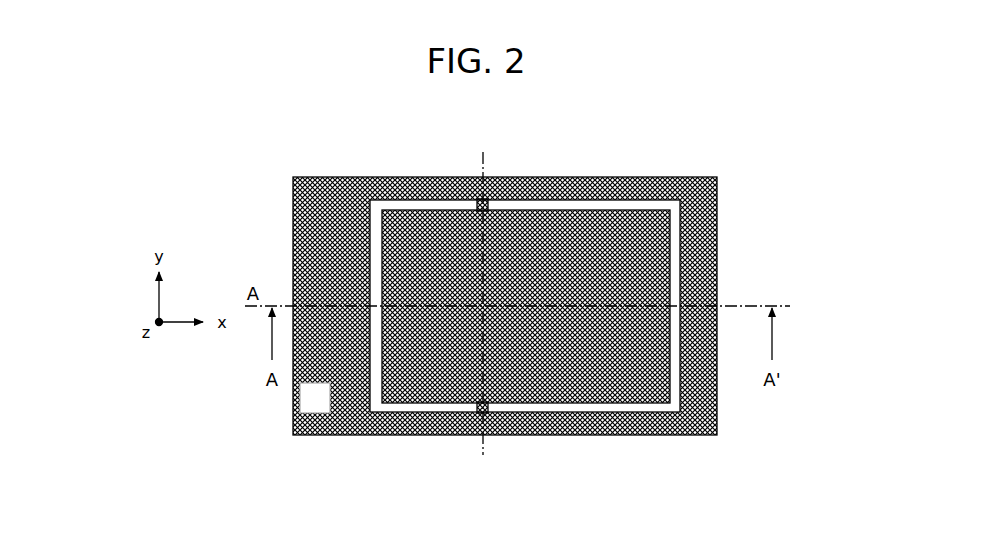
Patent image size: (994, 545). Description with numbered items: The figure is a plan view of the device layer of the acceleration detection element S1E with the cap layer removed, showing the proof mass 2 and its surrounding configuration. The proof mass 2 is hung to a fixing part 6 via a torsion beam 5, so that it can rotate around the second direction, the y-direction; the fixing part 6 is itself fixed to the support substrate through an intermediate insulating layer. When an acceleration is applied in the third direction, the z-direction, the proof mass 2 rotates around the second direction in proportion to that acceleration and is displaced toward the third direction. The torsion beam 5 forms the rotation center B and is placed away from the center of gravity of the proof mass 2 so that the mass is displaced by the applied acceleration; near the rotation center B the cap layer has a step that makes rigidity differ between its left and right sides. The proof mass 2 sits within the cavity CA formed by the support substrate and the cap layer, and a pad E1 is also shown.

The acceleration detection element S1E is at (334, 173).
The proof mass 2 is at (405, 212).
The torsion beam 5 is at (489, 205).
The fixing part 6 is at (348, 264).
The cavity CA is at (412, 412).
The pad E1 is at (294, 423).
The rotation center B is at (492, 303).